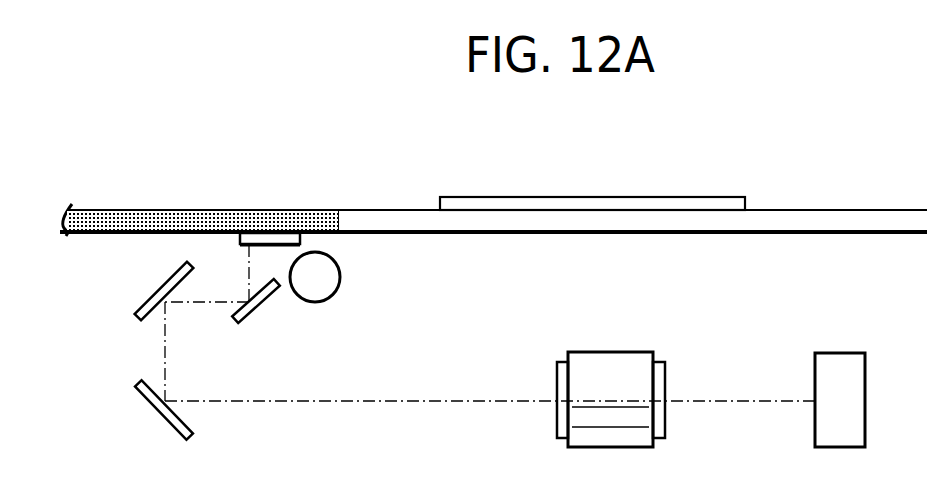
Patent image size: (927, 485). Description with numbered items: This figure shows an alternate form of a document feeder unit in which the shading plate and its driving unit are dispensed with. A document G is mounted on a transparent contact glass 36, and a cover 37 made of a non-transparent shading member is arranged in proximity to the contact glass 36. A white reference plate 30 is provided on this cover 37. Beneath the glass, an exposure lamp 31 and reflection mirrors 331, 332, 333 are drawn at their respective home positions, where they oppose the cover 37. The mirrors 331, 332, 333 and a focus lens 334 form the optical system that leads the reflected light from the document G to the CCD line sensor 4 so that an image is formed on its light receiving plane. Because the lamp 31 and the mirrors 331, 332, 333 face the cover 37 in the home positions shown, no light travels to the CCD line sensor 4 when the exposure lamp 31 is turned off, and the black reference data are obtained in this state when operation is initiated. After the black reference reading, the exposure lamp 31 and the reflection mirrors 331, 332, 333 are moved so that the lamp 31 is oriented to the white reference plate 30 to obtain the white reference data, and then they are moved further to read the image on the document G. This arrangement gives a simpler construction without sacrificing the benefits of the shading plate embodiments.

The CCD line sensor 4 is at (845, 352).
The white reference plate 30 is at (240, 237).
The exposure lamp 31 is at (341, 277).
The contact glass 36 is at (410, 209).
The cover 37 is at (141, 210).
The reflection mirror 331 is at (257, 311).
The reflection mirror 332 is at (146, 300).
The reflection mirror 333 is at (149, 404).
The focus lens 334 is at (613, 352).
The document G is at (700, 197).